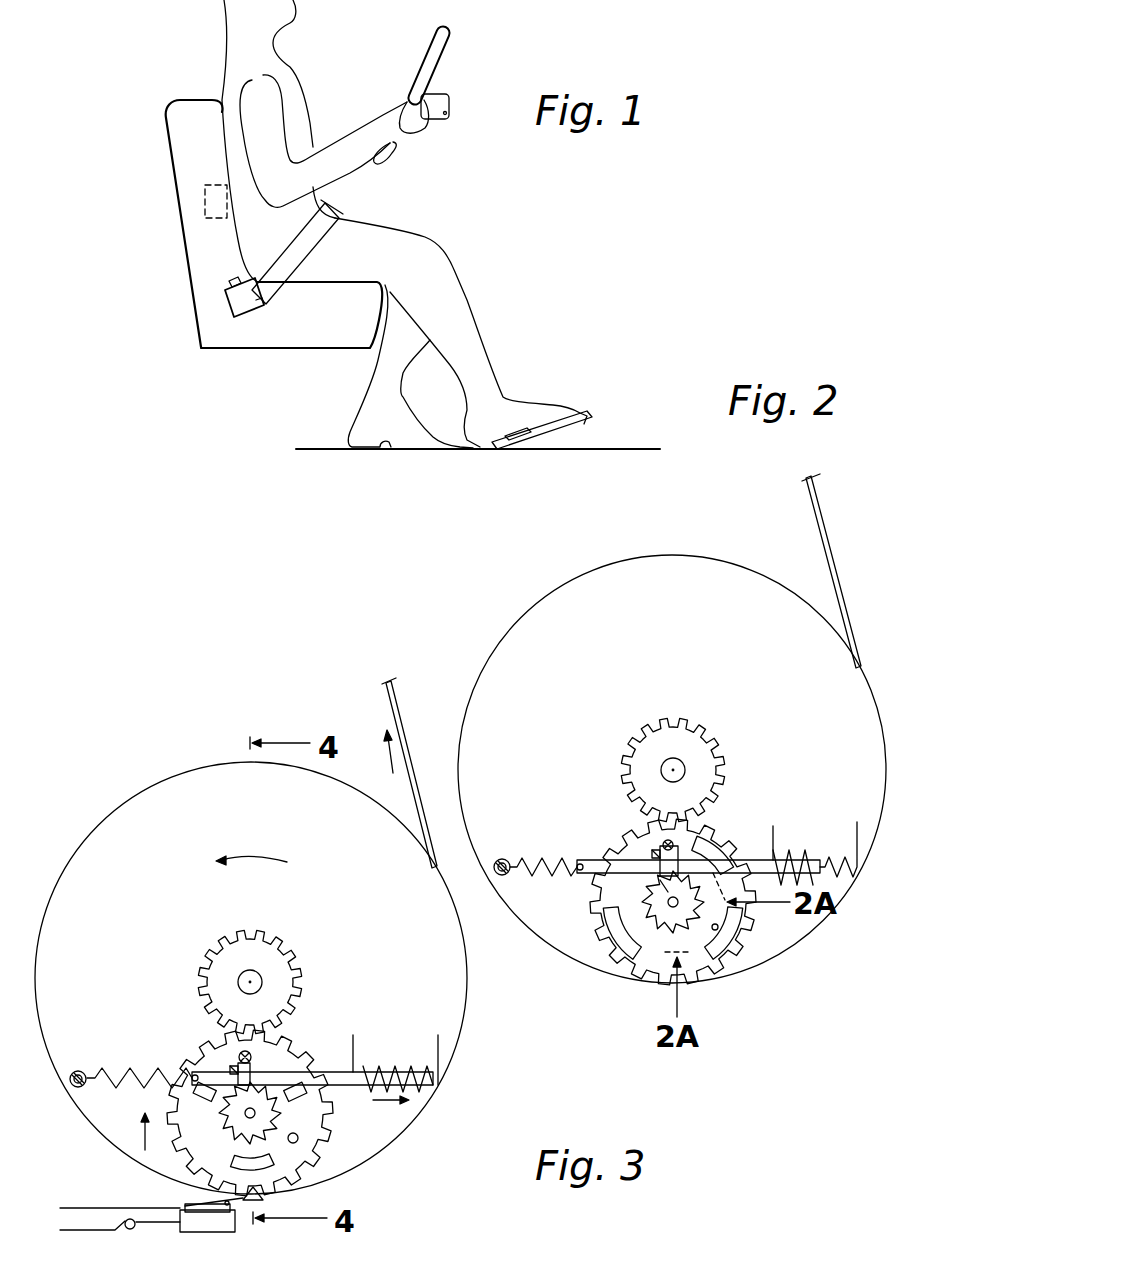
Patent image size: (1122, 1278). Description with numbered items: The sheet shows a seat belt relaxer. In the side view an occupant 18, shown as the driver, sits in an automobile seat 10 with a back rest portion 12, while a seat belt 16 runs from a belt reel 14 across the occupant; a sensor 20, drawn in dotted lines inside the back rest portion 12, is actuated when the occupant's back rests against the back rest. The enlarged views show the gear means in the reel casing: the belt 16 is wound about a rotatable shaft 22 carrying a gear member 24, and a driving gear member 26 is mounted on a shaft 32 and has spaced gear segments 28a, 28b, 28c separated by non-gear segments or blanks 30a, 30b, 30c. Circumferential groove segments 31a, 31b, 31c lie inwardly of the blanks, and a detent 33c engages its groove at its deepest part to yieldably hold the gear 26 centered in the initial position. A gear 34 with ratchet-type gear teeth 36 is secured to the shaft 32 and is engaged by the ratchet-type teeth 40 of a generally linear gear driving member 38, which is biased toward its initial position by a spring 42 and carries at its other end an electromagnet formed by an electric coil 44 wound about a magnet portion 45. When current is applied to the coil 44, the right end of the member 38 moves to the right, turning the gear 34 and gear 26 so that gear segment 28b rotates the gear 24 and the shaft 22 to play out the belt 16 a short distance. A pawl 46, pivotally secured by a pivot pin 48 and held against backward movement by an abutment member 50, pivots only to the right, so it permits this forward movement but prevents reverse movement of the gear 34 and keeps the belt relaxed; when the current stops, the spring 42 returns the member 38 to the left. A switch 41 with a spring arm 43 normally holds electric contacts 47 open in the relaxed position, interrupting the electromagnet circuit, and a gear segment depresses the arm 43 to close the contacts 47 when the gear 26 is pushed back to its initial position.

In FIG. 1, the automobile seat 10 is at (339, 332).
In FIG. 1, the back rest portion 12 is at (191, 239).
In FIG. 1, the belt reel 14 is at (223, 310).
In FIG. 2, the belt reel 14 is at (686, 570).
In FIG. 3, the belt reel 14 is at (167, 790).
In FIG. 1, the seat belt 16 is at (331, 213).
In FIG. 2, the seat belt 16 is at (832, 542).
In FIG. 3, the seat belt 16 is at (400, 708).
In FIG. 1, the occupant 18 is at (296, 108).
In FIG. 1, the sensor 20 is at (205, 202).
In FIG. 2, the rotatable shaft 22 is at (681, 760).
In FIG. 3, the rotatable shaft 22 is at (256, 974).
In FIG. 2, the gear member 24 is at (673, 722).
In FIG. 3, the gear member 24 is at (253, 930).
In FIG. 2, the driving gear member 26 is at (660, 940).
In FIG. 3, the driving gear member 26 is at (187, 1100).
In FIG. 2, the gear segment 28a is at (727, 837).
In FIG. 3, the gear segment 28a is at (330, 1142).
In FIG. 2, the gear segment 28b is at (623, 845).
In FIG. 3, the gear segment 28b is at (293, 1032).
In FIG. 2, the gear segment 28c is at (707, 987).
In FIG. 2, the non-gear segment 30a is at (725, 840).
In FIG. 3, the non-gear segment 30a is at (295, 1053).
In FIG. 2, the non-gear segment 30b is at (617, 920).
In FIG. 3, the non-gear segment 30b is at (210, 1052).
In FIG. 2, the non-gear segment 30c is at (723, 937).
In FIG. 3, the non-gear segment 30c is at (277, 1170).
In FIG. 2, the circumferential groove segment 31a is at (713, 847).
In FIG. 2, the circumferential groove segment 31b is at (623, 937).
In FIG. 2, the circumferential groove segment 31c is at (730, 953).
In FIG. 2, the shaft 32 is at (667, 907).
In FIG. 3, the shaft 32 is at (245, 1114).
In FIG. 2, the detent 33c is at (720, 925).
In FIG. 2, the gear 34 is at (677, 967).
In FIG. 3, the gear 34 is at (237, 1133).
In FIG. 2, the ratchet-type gear teeth 36 is at (647, 903).
In FIG. 3, the ratchet-type gear teeth 36 is at (240, 1068).
In FIG. 2, the gear driving member 38 is at (593, 860).
In FIG. 3, the gear driving member 38 is at (277, 1117).
In FIG. 2, the ratchet-type teeth 40 is at (637, 880).
In FIG. 3, the switch 41 is at (237, 1222).
In FIG. 2, the spring 42 is at (533, 873).
In FIG. 3, the spring 42 is at (131, 1078).
In FIG. 3, the spring arm 43 is at (292, 1150).
In FIG. 2, the electric coil 44 is at (843, 860).
In FIG. 3, the electric coil 44 is at (408, 1067).
In FIG. 2, the magnet portion 45 is at (797, 858).
In FIG. 3, the magnet portion 45 is at (373, 1070).
In FIG. 2, the pawl 46 is at (653, 840).
In FIG. 3, the electric contacts 47 is at (217, 1195).
In FIG. 2, the pivot pin 48 is at (669, 840).
In FIG. 2, the abutment member 50 is at (653, 852).